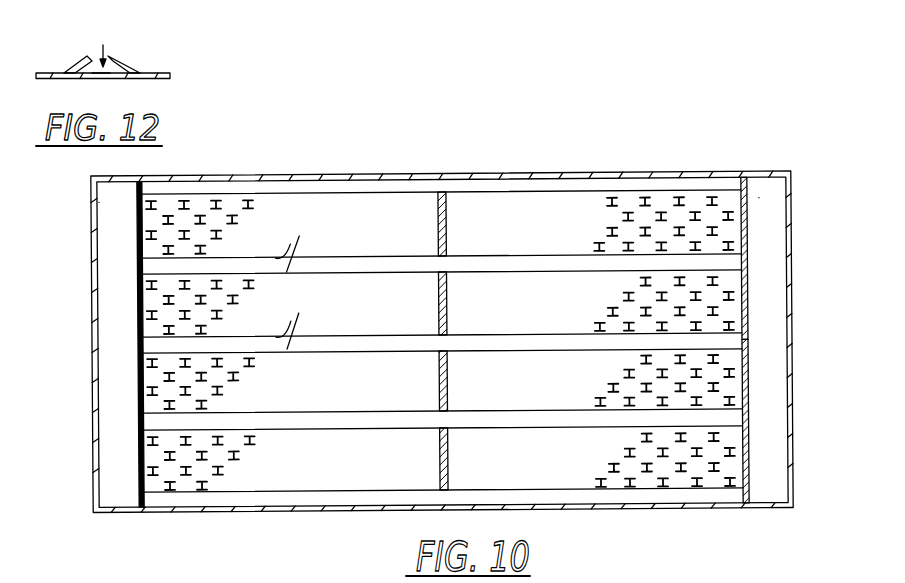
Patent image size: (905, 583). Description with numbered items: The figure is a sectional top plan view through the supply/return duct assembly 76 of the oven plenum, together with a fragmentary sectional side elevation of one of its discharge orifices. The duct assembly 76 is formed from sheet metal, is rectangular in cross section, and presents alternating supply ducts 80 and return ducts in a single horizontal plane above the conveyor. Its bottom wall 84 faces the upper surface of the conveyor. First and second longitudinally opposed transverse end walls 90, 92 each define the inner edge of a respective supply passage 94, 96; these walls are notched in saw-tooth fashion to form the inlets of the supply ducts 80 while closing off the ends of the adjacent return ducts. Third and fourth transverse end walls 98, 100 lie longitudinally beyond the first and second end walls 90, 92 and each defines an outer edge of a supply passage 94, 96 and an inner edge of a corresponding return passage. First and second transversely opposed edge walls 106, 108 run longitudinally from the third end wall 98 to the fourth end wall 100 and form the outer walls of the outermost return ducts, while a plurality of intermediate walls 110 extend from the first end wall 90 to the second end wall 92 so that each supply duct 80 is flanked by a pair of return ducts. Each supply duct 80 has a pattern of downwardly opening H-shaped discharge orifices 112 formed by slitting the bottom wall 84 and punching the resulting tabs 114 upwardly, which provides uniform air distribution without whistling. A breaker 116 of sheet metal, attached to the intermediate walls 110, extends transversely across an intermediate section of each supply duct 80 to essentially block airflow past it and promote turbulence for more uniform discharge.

In FIG. 10, the supply/return duct assembly 76 is at (583, 132).
In FIG. 10, the supply duct 80 is at (748, 230).
In FIG. 12, the bottom wall 84 is at (153, 72).
In FIG. 10, the bottom wall 84 is at (372, 208).
In FIG. 10, the first transverse end wall 90 is at (748, 424).
In FIG. 10, the second transverse end wall 92 is at (138, 428).
In FIG. 10, the supply passage 94 is at (780, 348).
In FIG. 10, the supply passage 96 is at (130, 347).
In FIG. 10, the third transverse end wall 98 is at (793, 293).
In FIG. 10, the fourth transverse end wall 100 is at (92, 334).
In FIG. 10, the first transverse edge wall 106 is at (380, 510).
In FIG. 10, the second transverse edge wall 108 is at (291, 173).
In FIG. 10, the intermediate wall 110 is at (298, 281).
In FIG. 12, the H-shaped discharge orifice 112 is at (93, 79).
In FIG. 10, the H-shaped discharge orifice 112 is at (680, 206).
In FIG. 12, the tab 114 is at (83, 62).
In FIG. 10, the breaker 116 is at (442, 240).